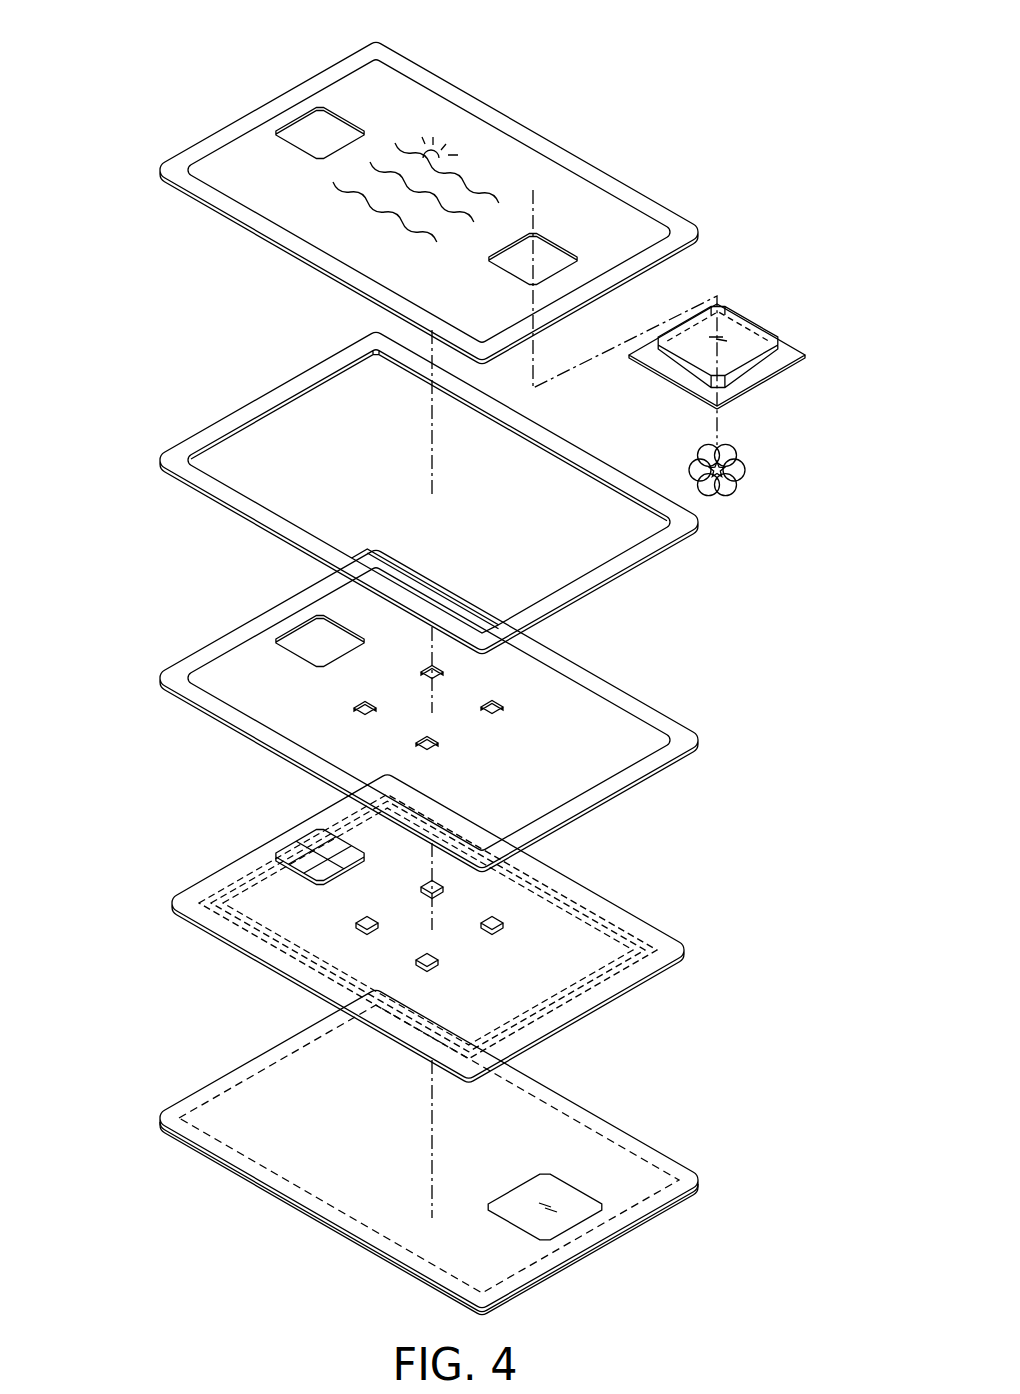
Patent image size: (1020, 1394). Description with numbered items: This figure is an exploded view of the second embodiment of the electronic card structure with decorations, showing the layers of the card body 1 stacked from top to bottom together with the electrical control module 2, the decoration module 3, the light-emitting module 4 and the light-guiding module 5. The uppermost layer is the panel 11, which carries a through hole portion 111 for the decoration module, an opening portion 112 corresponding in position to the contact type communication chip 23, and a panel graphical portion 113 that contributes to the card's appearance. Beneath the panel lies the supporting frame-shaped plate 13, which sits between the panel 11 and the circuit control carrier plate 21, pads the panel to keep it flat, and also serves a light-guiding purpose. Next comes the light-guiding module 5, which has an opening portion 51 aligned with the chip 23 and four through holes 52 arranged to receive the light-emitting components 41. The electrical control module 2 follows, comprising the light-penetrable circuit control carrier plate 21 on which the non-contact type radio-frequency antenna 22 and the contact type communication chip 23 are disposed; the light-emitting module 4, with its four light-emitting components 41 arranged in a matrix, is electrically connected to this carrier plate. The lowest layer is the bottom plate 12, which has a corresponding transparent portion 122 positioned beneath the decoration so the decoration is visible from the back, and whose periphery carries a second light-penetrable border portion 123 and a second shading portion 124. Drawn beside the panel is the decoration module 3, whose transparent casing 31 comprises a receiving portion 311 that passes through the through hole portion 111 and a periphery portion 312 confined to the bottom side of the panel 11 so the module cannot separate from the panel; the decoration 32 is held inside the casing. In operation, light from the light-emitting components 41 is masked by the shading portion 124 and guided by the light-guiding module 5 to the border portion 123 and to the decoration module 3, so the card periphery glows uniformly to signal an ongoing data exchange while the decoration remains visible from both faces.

The card body 1 is at (192, 106).
The panel 11 is at (692, 231).
The through hole portion 111 is at (546, 253).
The opening portion 112 is at (320, 132).
The panel graphical portion 113 is at (433, 148).
The bottom plate 12 is at (673, 1162).
The corresponding transparent portion 122 is at (588, 1213).
The second light-penetrable border portion 123 is at (218, 1085).
The second shading portion 124 is at (310, 1170).
The supporting frame-shaped plate 13 is at (667, 550).
The electrical control module 2 is at (157, 877).
The circuit control carrier plate 21 is at (695, 965).
The non-contact type radio-frequency antenna 22 is at (582, 985).
The contact type communication chip 23 is at (307, 842).
The decoration module 3 is at (822, 463).
The transparent casing 31 is at (747, 298).
The receiving portion 311 is at (763, 330).
The periphery portion 312 is at (775, 367).
The decoration 32 is at (745, 478).
The light-emitting module 4 is at (515, 904).
The light-emitting component 41 is at (353, 920).
The light-guiding module 5 is at (625, 725).
The opening portion 51 is at (302, 635).
The through hole 52 is at (498, 703).